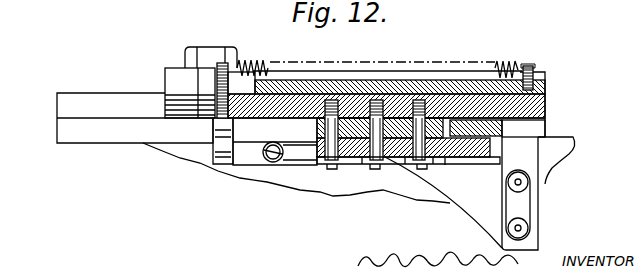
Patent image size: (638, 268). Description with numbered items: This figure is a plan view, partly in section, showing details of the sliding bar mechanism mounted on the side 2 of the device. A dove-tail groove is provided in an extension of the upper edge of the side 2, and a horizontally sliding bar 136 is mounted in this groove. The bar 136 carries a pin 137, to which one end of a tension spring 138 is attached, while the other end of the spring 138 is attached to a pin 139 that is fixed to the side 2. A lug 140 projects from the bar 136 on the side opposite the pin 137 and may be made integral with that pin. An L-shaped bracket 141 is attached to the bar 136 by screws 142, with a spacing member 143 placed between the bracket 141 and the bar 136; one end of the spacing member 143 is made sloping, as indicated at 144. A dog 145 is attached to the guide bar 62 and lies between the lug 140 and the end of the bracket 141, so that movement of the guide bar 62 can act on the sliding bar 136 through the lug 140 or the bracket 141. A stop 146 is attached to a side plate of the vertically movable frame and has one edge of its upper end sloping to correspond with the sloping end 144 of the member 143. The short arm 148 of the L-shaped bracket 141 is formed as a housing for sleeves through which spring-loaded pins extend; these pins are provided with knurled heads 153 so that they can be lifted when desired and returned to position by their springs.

The side 2 is at (546, 89).
The side guide bar 62 is at (253, 158).
The horizontally sliding bar 136 is at (250, 78).
The pin 137 is at (217, 75).
The tension spring 138 is at (267, 72).
The pin 139 is at (529, 66).
The lug 140 is at (218, 150).
The L-shaped bracket 141 is at (442, 125).
The screws 142 is at (410, 159).
The spacing member 143 is at (446, 158).
The sloping end 144 is at (451, 168).
The dog 145 is at (307, 139).
The stop 146 is at (497, 129).
The short arm 148 is at (545, 173).
The knurled heads 153 is at (530, 227).